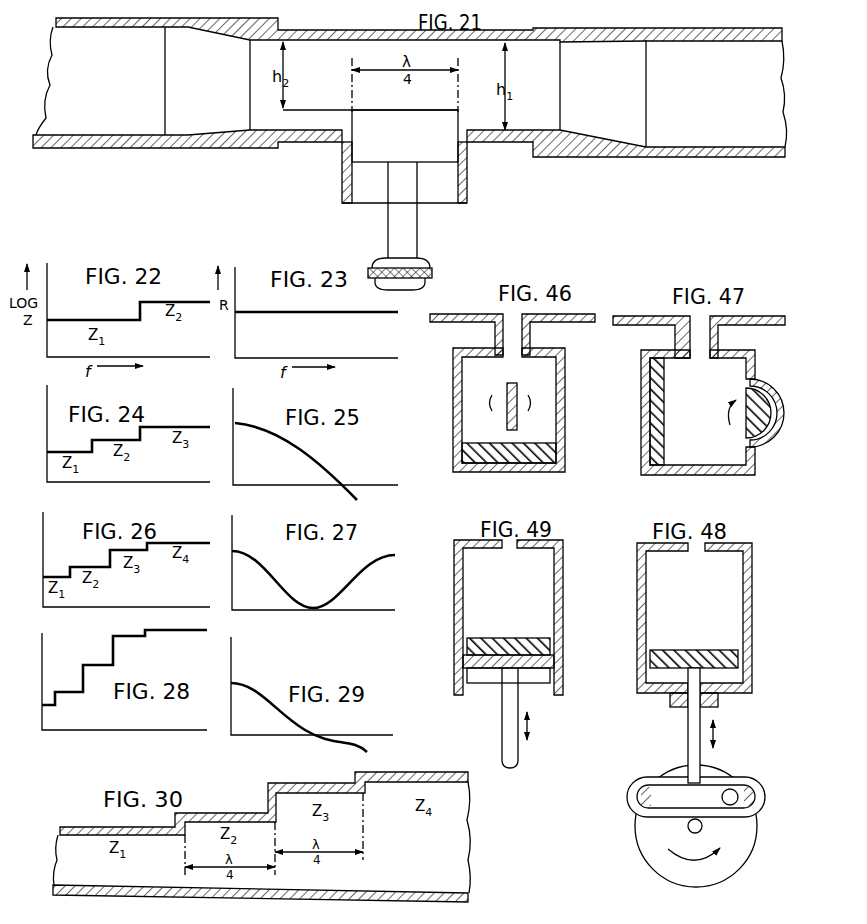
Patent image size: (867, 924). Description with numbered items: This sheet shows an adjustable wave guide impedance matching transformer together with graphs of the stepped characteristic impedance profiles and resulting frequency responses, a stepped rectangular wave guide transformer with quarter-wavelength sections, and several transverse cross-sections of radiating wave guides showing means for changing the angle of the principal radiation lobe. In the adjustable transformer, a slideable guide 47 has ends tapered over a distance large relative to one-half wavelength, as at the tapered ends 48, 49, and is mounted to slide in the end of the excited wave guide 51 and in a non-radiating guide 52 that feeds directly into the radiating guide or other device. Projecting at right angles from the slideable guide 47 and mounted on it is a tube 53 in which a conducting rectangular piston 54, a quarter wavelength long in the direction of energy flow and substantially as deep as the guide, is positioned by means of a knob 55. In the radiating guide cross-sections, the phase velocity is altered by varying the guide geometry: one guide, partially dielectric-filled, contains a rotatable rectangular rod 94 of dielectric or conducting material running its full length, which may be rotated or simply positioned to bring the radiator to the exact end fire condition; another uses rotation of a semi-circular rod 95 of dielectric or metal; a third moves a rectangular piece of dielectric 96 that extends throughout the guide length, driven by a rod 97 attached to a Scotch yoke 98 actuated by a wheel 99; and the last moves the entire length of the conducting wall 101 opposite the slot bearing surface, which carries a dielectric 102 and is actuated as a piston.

In FIG. 21, the slideable guide 47 is at (366, 30).
In FIG. 21, the tapered end 48 is at (196, 136).
In FIG. 21, the tapered end 49 is at (593, 141).
In FIG. 21, the excited wave guide 51 is at (230, 148).
In FIG. 21, the non-radiating guide 52 is at (601, 152).
In FIG. 21, the tube 53 is at (467, 184).
In FIG. 21, the conducting rectangular piston 54 is at (437, 162).
In FIG. 21, the knob 55 is at (430, 273).
In FIG. 46, the rotatable rectangular rod 94 is at (522, 383).
In FIG. 47, the semi-circular rod 95 is at (745, 393).
In FIG. 48, the rectangular piece of dielectric 96 is at (676, 656).
In FIG. 48, the rod 97 is at (690, 732).
In FIG. 48, the Scotch yoke 98 is at (627, 797).
In FIG. 48, the wheel 99 is at (640, 836).
In FIG. 49, the conducting wall 101 is at (486, 670).
In FIG. 49, the dielectric 102 is at (495, 640).